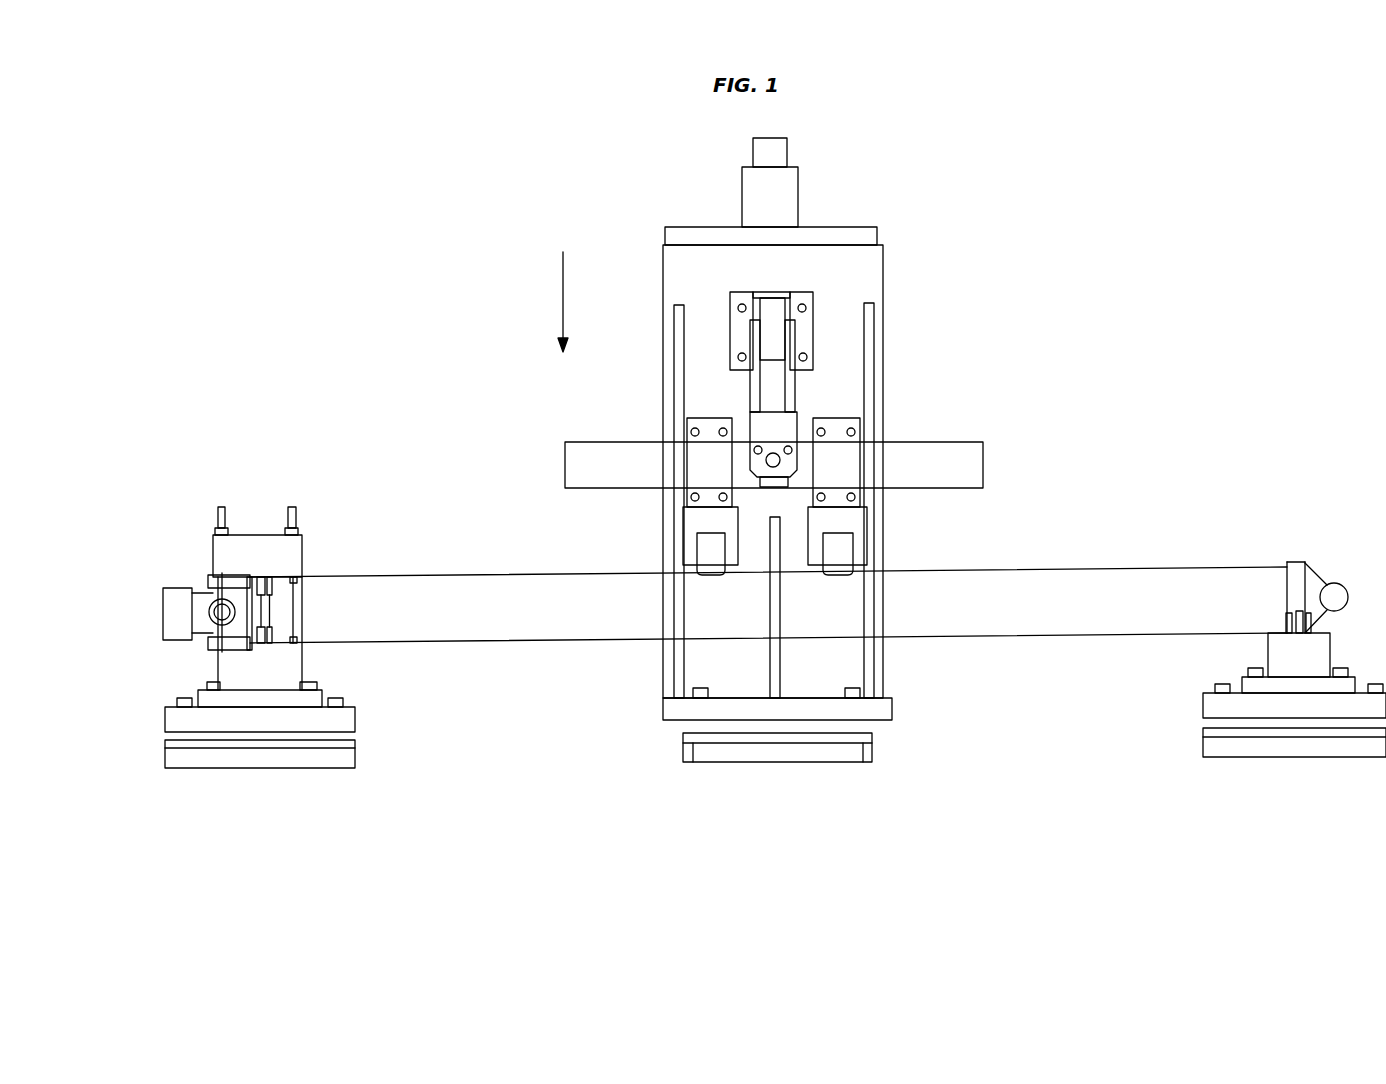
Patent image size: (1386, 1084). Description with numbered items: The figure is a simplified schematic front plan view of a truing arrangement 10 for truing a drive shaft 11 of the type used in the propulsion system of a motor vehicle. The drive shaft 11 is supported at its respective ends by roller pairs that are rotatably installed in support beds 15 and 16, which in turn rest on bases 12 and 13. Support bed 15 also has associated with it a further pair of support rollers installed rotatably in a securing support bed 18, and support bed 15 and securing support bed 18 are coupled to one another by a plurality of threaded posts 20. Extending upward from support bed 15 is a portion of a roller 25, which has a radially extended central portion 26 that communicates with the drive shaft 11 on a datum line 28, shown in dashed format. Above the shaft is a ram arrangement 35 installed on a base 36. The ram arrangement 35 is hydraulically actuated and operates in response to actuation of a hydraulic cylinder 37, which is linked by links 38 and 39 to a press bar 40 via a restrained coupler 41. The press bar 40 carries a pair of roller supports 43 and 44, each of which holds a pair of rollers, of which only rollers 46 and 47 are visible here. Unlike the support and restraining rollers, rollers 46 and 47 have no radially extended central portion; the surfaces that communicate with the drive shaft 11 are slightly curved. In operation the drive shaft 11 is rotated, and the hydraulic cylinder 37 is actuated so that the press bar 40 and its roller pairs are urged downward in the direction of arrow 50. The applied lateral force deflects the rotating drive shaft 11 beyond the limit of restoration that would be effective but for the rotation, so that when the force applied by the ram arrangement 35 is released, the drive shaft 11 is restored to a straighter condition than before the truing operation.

The truing arrangement 10 is at (794, 811).
The drive shaft 11 is at (1153, 577).
The base 12 is at (345, 716).
The base 13 is at (1210, 703).
The support bed 15 is at (228, 675).
The support bed 16 is at (1277, 653).
The securing support bed 18 is at (292, 552).
The threaded posts 20 is at (225, 510).
The roller 25 is at (265, 640).
The radially extended central portion 26 is at (272, 630).
The datum line 28 is at (265, 612).
The ram arrangement 35 is at (890, 228).
The base 36 is at (710, 757).
The hydraulic cylinder 37 is at (778, 152).
The link 38 is at (755, 386).
The link 39 is at (790, 386).
The press bar 40 is at (935, 442).
The restrained coupler 41 is at (793, 418).
The roller support 43 is at (693, 523).
The roller support 44 is at (852, 517).
The roller 46 is at (708, 555).
The roller 47 is at (842, 555).
The arrow 50 is at (565, 290).